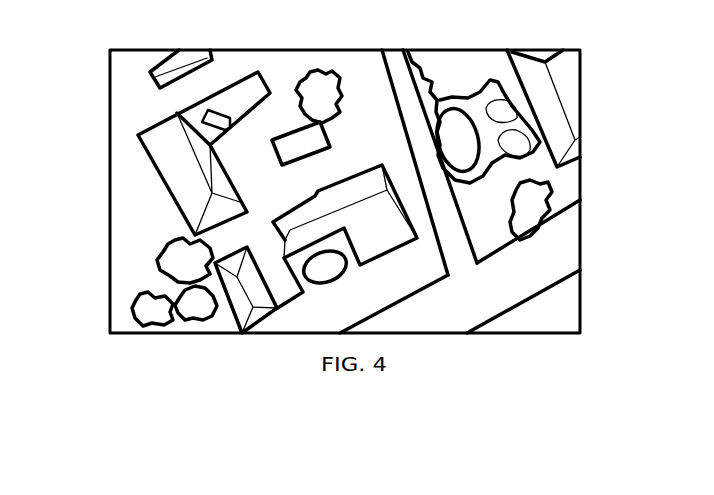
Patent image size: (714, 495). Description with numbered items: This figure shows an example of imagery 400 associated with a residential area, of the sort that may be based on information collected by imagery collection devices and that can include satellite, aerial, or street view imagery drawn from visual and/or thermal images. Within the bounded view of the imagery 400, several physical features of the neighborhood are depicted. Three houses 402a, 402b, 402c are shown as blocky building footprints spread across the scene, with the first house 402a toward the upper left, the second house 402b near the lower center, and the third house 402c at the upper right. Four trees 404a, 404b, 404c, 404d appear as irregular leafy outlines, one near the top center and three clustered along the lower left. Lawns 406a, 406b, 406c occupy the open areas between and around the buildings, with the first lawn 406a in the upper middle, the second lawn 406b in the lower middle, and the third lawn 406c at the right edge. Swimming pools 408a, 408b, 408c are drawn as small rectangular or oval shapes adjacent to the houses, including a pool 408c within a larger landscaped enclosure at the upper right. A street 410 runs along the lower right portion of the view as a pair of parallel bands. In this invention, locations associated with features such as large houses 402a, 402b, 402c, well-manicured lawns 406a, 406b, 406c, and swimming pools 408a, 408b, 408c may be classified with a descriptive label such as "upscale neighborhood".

The imagery 400 is at (93, 66).
The house 402a is at (172, 162).
The house 402b is at (392, 238).
The house 402c is at (525, 73).
The tree 404a is at (313, 88).
The tree 404b is at (158, 260).
The tree 404c is at (150, 310).
The tree 404d is at (200, 303).
The lawn 406a is at (347, 140).
The lawn 406b is at (362, 293).
The lawn 406c is at (565, 183).
The swimming pool 408a is at (300, 143).
The swimming pool 408b is at (326, 268).
The swimming pool 408c is at (452, 121).
The street 410 is at (548, 262).